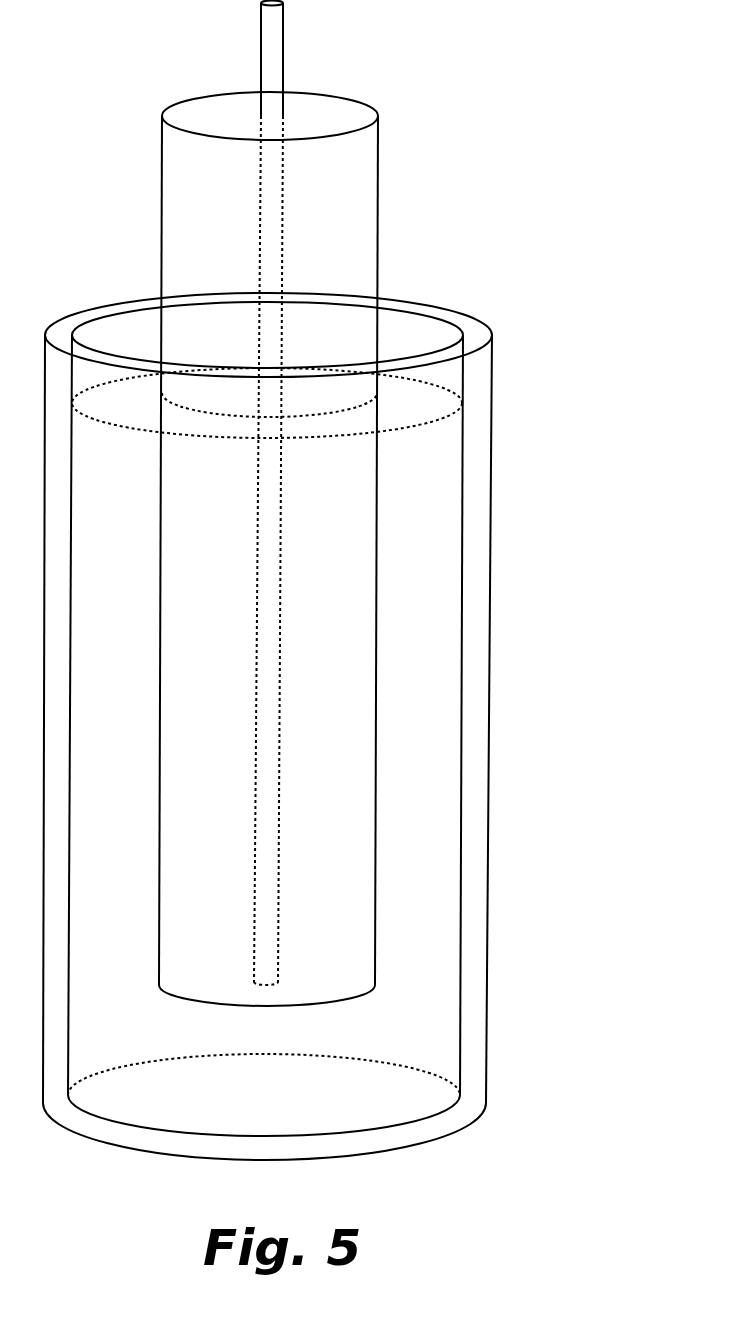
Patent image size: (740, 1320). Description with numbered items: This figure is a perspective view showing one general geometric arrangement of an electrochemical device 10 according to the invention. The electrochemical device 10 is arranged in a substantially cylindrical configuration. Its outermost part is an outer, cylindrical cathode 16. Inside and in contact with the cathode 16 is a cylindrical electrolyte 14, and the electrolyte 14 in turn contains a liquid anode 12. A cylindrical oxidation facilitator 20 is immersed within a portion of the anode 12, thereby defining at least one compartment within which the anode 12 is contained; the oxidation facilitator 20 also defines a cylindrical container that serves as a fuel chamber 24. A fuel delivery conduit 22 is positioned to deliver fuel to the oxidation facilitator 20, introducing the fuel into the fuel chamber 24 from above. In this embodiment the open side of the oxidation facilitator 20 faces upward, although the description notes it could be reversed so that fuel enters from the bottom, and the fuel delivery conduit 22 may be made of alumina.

The electrochemical device 10 is at (322, 676).
The liquid anode 12 is at (422, 485).
The cylindrical electrolyte 14 is at (473, 557).
The outer cylindrical cathode 16 is at (485, 617).
The cylindrical oxidation facilitator 20 is at (311, 549).
The fuel delivery conduit 22 is at (273, 65).
The fuel chamber 24 is at (345, 258).